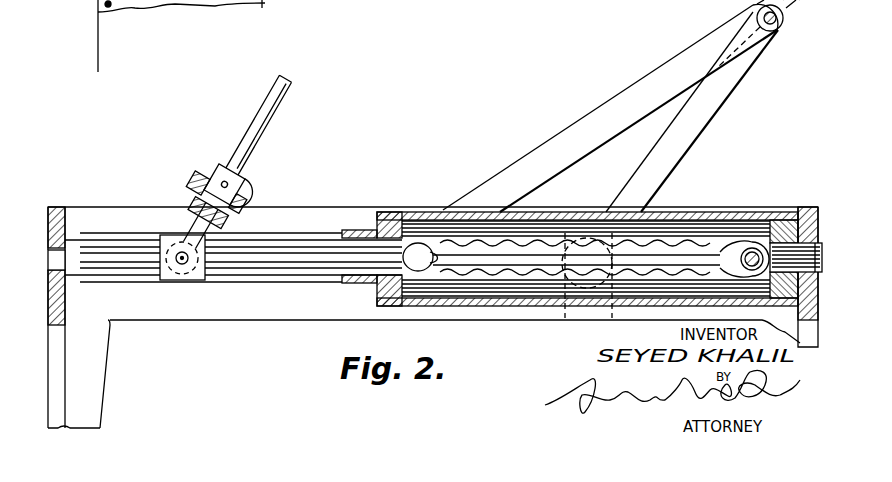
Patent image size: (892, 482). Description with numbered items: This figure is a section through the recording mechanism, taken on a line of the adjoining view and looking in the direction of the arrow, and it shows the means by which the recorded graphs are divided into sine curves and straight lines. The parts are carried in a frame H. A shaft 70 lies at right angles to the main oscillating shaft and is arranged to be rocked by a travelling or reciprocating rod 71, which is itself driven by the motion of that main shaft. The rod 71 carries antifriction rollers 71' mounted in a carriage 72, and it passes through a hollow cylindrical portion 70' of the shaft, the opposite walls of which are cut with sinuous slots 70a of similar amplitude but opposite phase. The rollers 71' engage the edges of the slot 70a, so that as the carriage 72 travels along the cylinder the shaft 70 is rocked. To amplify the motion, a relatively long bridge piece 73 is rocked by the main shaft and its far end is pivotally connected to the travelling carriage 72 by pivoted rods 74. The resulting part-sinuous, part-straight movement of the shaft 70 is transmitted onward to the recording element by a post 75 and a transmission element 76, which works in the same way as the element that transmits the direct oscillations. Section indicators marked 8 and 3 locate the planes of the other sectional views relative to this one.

The shaft 70 is at (225, 230).
The hollow cylindrical portion 70' is at (587, 228).
The sinuous slot 70a is at (673, 243).
The travelling rod 71 is at (797, 223).
The antifriction roller 71' is at (771, 221).
The carriage 72 is at (734, 250).
The bridge piece 73 is at (718, 95).
The pivoted rod 74 is at (658, 53).
The post 75 is at (270, 121).
The transmission element 76 is at (237, 167).
The frame H is at (385, 184).
The section line 8- 8 is at (594, 198).
The section line 3- 3 is at (128, 40).